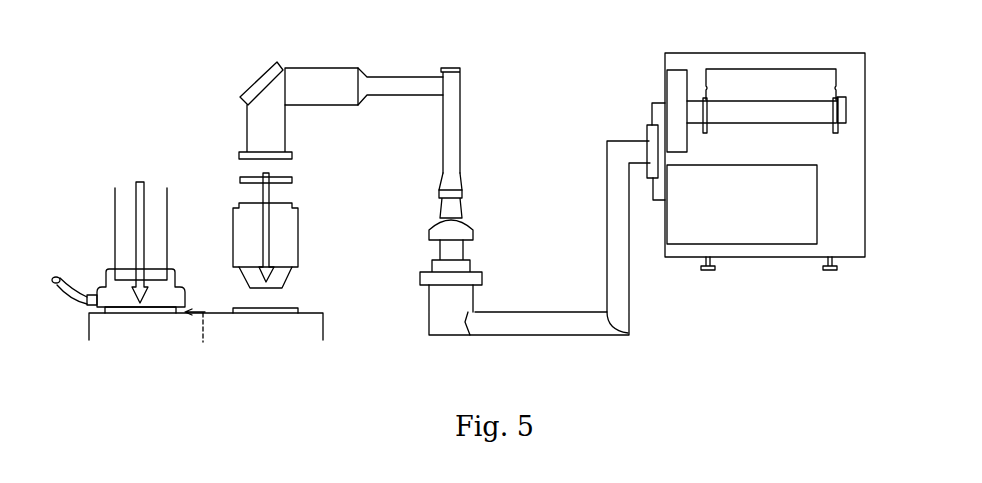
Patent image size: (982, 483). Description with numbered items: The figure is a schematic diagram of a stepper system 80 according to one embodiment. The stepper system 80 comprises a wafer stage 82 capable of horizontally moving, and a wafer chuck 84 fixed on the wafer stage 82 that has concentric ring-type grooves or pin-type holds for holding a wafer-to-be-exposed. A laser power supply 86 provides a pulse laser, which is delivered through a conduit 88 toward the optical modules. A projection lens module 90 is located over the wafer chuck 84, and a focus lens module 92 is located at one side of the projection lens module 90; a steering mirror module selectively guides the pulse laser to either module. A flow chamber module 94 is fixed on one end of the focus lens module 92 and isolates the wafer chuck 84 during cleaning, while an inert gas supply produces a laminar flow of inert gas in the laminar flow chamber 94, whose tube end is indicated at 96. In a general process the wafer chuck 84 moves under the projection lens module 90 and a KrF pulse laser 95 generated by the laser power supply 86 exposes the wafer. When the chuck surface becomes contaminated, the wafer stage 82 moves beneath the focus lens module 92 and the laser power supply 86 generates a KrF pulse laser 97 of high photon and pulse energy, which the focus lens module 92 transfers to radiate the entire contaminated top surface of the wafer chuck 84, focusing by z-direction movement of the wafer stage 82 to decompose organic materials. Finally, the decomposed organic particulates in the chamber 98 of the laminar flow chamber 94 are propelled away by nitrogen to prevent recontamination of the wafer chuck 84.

The stepper system 80 is at (828, 332).
The wafer stage 82 is at (89, 332).
The wafer chuck 84 is at (140, 316).
The laser power supply 86 is at (764, 80).
The conduit pipe 88 is at (548, 326).
The projection lens module 90 is at (291, 233).
The focus lens module 92 is at (158, 228).
The flow chamber module 94 is at (100, 290).
The KrF pulse laser 95 is at (267, 196).
The nozzle tip 96 is at (48, 268).
The KrF pulse laser 97 is at (140, 204).
The chamber 98 is at (180, 302).